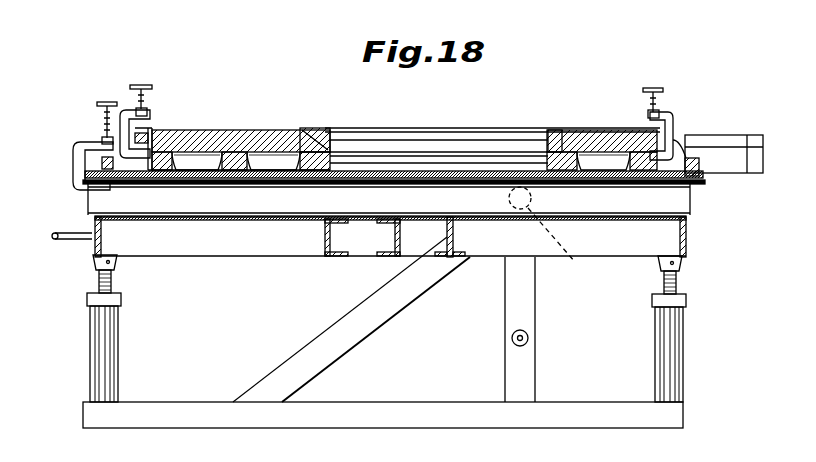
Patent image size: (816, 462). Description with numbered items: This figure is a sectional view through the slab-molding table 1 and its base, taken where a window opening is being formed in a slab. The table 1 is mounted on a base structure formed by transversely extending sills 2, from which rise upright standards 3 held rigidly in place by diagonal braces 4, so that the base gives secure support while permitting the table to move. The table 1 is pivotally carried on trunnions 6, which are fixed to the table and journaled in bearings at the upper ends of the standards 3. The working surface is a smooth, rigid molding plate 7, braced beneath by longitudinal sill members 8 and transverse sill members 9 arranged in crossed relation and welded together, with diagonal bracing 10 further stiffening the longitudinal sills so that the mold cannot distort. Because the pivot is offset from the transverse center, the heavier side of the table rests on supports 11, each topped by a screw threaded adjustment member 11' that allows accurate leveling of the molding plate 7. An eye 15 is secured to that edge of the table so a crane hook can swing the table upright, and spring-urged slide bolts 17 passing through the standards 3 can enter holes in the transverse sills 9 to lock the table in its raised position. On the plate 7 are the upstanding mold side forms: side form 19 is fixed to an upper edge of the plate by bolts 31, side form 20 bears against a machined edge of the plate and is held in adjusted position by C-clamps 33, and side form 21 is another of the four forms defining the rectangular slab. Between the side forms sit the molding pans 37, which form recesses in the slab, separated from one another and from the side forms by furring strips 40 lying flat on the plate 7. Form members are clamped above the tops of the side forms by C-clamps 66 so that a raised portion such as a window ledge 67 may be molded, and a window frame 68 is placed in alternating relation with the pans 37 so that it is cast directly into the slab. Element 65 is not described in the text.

The molding table 1 is at (689, 132).
The sills 2 is at (602, 410).
The upright standards 3 is at (531, 295).
The diagonal braces 4 is at (369, 331).
The trunnions 6 is at (547, 233).
The molding plate 7 is at (696, 186).
The longitudinal sill members 8 is at (98, 246).
The transverse sill members 9 is at (688, 206).
The diagonal bracing 10 is at (192, 250).
The supports 11 is at (403, 354).
The screw threaded adjustment member 11' is at (406, 281).
The eye 15 is at (58, 243).
The slide bolts 17 is at (528, 338).
The mold side form 19 is at (707, 169).
The mold side form 20 is at (714, 133).
The mold side form 21 is at (150, 132).
The bolts 31 is at (680, 155).
The C-clamps 33 is at (75, 150).
The molding pans 37 is at (212, 158).
The furring strips 40 is at (162, 176).
The plate 65 is at (514, 126).
The C-clamps 66 is at (136, 100).
The window ledge 67 is at (570, 130).
The window frame 68 is at (306, 134).